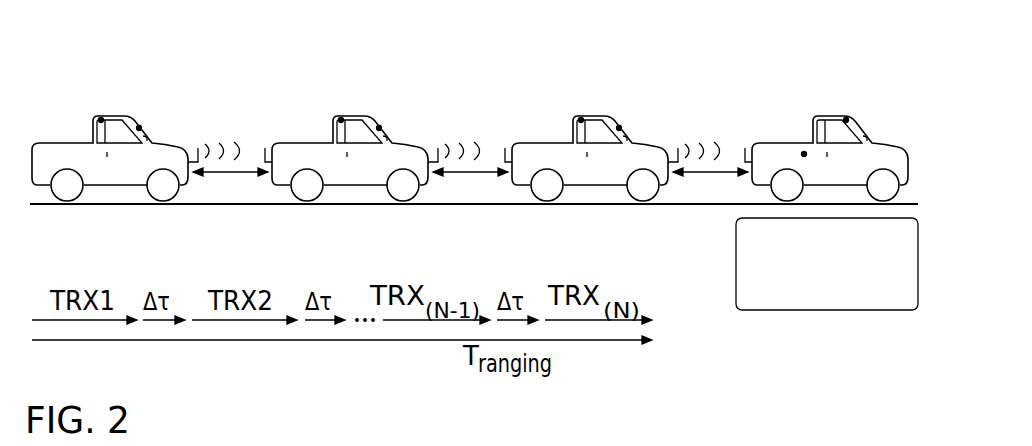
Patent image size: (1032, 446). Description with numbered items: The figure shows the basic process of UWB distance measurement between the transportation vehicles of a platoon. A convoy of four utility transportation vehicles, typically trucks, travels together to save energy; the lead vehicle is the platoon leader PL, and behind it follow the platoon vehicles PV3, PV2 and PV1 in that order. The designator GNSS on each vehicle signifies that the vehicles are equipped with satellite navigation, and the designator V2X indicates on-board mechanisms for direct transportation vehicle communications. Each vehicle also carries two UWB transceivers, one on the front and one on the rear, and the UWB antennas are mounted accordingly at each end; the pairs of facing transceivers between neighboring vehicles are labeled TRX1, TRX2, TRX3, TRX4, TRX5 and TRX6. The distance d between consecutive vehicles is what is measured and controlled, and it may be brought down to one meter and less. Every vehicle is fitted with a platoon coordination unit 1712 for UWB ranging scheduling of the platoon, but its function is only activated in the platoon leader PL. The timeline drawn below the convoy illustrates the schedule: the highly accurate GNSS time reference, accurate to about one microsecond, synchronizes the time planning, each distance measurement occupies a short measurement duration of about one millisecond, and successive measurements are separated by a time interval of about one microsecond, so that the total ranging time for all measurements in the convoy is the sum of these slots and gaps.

The platoon vehicle PV1 is at (63, 148).
The platoon vehicle PV2 is at (303, 149).
The platoon vehicle PV3 is at (544, 148).
The platoon leader PL is at (891, 148).
The satellite navigation GNSS is at (100, 118).
The direct vehicle communications V2X is at (139, 126).
The measurement duration TRX1 is at (196, 123).
The measurement duration TRX2 is at (354, 123).
The measurement duration TRX3 is at (426, 112).
The measurement duration TRX4 is at (594, 123).
The measurement duration TRX5 is at (666, 112).
The measurement duration TRX6 is at (742, 123).
The distance d is at (470, 183).
The platoon coordination unit 1712 is at (758, 298).